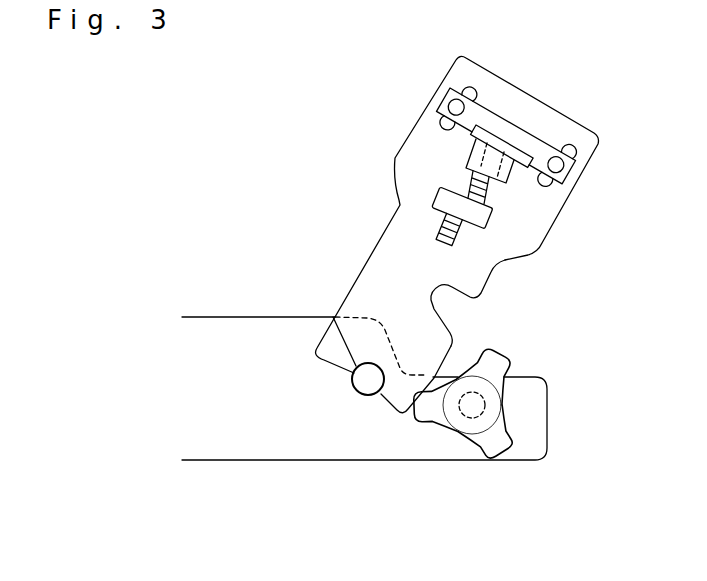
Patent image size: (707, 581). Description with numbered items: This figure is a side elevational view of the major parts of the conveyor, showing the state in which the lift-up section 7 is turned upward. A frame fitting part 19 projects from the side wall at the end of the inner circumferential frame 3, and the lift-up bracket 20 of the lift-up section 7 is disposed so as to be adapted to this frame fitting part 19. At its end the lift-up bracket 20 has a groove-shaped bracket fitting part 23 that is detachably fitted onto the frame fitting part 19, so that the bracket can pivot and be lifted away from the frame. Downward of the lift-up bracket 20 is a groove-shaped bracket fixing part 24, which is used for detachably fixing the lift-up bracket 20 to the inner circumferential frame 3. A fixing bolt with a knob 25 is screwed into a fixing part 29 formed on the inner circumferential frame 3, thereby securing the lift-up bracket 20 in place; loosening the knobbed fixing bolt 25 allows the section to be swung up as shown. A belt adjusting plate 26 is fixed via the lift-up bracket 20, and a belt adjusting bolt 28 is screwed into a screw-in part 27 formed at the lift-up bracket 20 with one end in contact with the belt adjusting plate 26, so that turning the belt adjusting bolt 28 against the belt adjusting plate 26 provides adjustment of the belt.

The inner circumferential frame 3 is at (238, 431).
The lift-up section 7 is at (233, 171).
The frame fitting part 19 is at (366, 382).
The lift-up bracket 20 is at (527, 222).
The bracket fitting part 23 is at (333, 316).
The bracket fixing part 24 is at (433, 306).
The fixing bolt with a knob 25 is at (490, 445).
The belt adjusting plate 26 is at (518, 138).
The screw-in part 27 is at (446, 203).
The belt adjusting bolt 28 is at (478, 176).
The fixing part 29 is at (486, 408).